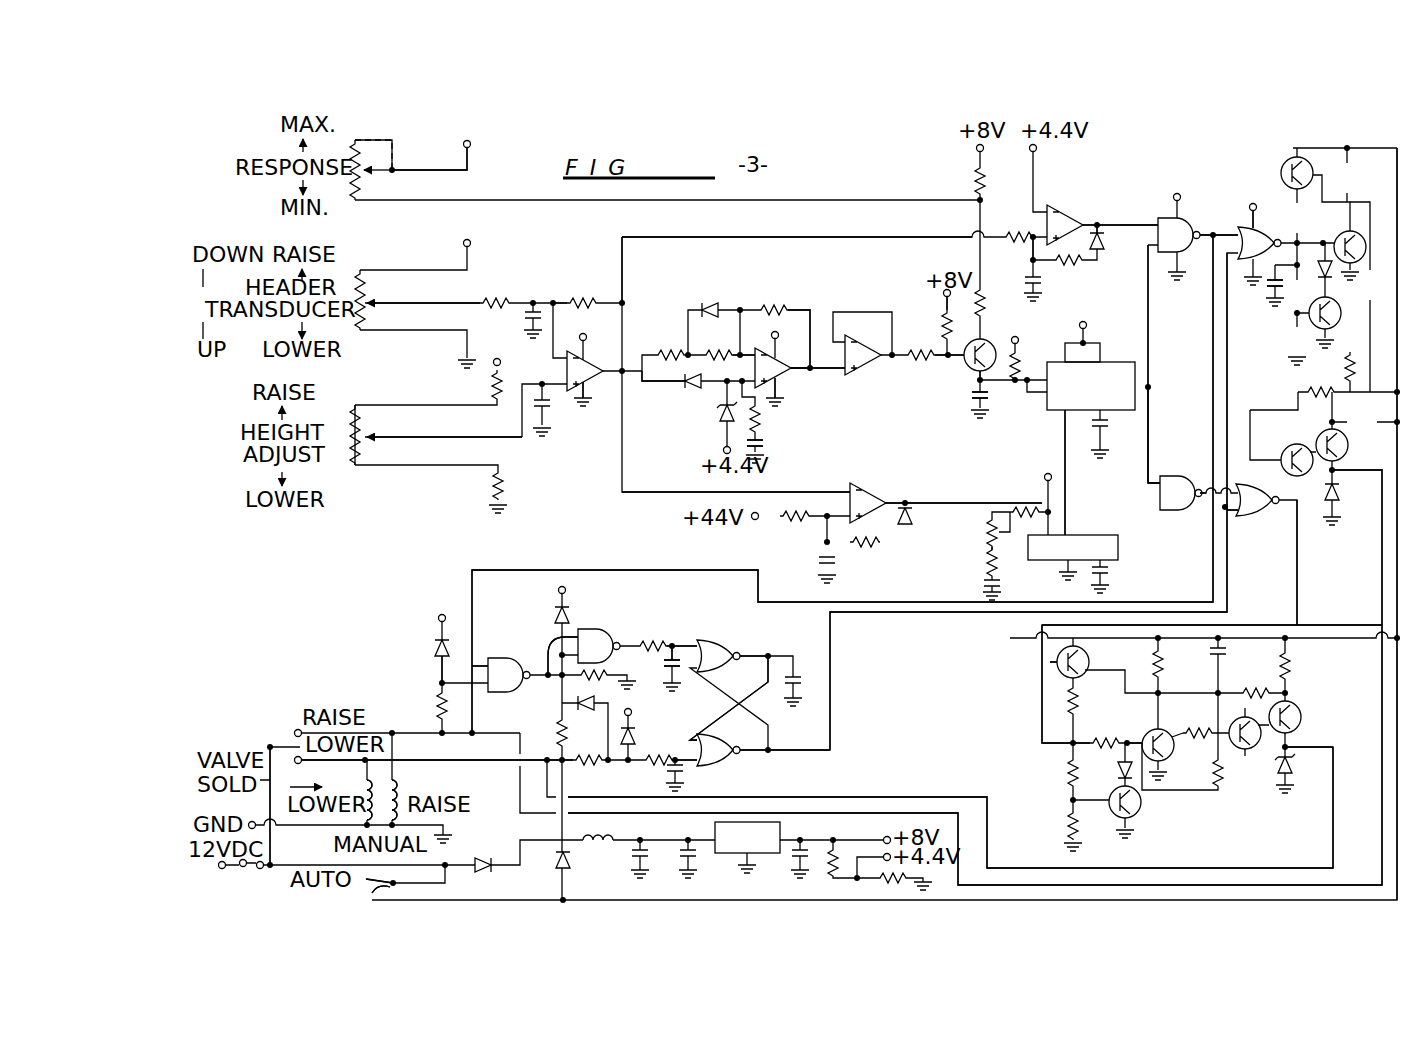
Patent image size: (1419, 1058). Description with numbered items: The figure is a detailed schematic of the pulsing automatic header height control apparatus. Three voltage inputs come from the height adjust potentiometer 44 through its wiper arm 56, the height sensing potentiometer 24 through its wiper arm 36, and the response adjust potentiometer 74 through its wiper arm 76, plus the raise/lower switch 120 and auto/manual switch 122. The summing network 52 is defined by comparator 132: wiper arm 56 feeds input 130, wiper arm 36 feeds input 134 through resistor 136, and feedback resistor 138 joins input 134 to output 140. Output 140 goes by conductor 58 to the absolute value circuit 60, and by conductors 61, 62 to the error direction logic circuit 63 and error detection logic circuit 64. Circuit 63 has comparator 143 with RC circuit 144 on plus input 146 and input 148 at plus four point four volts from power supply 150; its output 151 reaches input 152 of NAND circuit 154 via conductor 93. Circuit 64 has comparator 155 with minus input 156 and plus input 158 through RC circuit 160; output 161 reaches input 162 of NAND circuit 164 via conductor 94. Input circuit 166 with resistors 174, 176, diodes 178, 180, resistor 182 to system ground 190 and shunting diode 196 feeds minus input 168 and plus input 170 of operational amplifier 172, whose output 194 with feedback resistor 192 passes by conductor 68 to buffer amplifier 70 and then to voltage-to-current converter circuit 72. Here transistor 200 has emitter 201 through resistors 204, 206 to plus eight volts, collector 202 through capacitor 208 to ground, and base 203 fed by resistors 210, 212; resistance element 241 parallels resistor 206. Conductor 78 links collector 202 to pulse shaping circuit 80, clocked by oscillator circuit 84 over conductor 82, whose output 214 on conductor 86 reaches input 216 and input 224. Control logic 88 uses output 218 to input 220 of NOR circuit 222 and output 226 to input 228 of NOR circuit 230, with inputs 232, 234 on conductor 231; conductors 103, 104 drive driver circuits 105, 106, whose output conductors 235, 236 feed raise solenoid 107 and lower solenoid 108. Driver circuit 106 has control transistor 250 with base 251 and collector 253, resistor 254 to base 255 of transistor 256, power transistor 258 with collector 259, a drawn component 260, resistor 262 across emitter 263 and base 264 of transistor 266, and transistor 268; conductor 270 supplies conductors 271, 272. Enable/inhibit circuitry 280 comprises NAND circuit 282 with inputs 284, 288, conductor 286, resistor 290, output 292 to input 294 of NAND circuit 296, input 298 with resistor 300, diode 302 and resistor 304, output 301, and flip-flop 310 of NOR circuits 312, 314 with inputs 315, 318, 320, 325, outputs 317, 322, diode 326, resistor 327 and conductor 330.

The header height sensing potentiometer 24 is at (355, 286).
The wiper arm 36 is at (398, 303).
The height adjust potentiometer 44 is at (351, 458).
The summing network 52 is at (581, 424).
The wiper arm 56 is at (403, 437).
The conductor 58 is at (640, 277).
The absolute value circuit 60 is at (806, 411).
The conductor 61 is at (748, 237).
The conductor 62 is at (624, 492).
The error direction logic circuit 63 is at (1110, 194).
The error detection logic circuit 64 is at (913, 544).
The conductor 68 is at (813, 372).
The buffer amplifying circuit 70 is at (870, 372).
The voltage-to-current converter circuit 72 is at (942, 398).
The response adjust potentiometer 74 is at (350, 194).
The wiper arm 76 is at (440, 170).
The conductor 78 is at (1040, 407).
The pulse shaping circuit 80 is at (1061, 395).
The conductor 82 is at (1063, 455).
The oscillator circuit 84 is at (1160, 548).
The conductor 86 is at (1106, 425).
The control logic 88 is at (1193, 307).
The conductor 93 is at (1101, 250).
The conductor 94 is at (962, 505).
The conductor 103 is at (1258, 240).
The conductor 104 is at (1297, 578).
The driver circuit 105 is at (1282, 325).
The driver circuit 106 is at (1198, 800).
The raise solenoid 107 is at (396, 785).
The lower solenoid 108 is at (365, 782).
The raise/lower switch 120 is at (282, 745).
The auto/manual switch 122 is at (368, 897).
The input 130 is at (543, 383).
The comparator 132 is at (590, 400).
The input 134 is at (558, 308).
The resistor 136 is at (512, 309).
The feedback resistor 138 is at (598, 262).
The output 140 is at (604, 370).
The comparator 143 is at (1084, 222).
The RC circuit 144 is at (1027, 249).
The plus input 146 is at (1013, 221).
The input 148 is at (1047, 207).
The power supply 150 is at (832, 830).
The output 151 is at (1103, 225).
The input 152 is at (1120, 225).
The NAND circuit 154 is at (1182, 207).
The comparator 155 is at (873, 492).
The minus input 156 is at (822, 487).
The plus input 158 is at (848, 514).
The RC circuit 160 is at (815, 534).
The output 161 is at (950, 502).
The input 162 is at (1125, 503).
The NAND circuit 164 is at (1180, 476).
The input circuit 166 is at (682, 397).
The minus input 168 is at (742, 352).
The plus input 170 is at (750, 368).
The comparator/operational amplifier 172 is at (808, 330).
The resistor 174 is at (682, 352).
The resistor 176 is at (705, 352).
The diode 178 is at (695, 390).
The diode 180 is at (720, 425).
The resistor 182 is at (758, 425).
The system ground 190 is at (760, 452).
The feedback resistor 192 is at (778, 306).
The output 194 is at (780, 398).
The shunting diode 196 is at (710, 305).
The transistor 200 is at (959, 367).
The emitter 201 is at (1018, 341).
The collector 202 is at (978, 374).
The base 203 is at (968, 343).
The resistor 204 is at (1033, 278).
The resistor 206 is at (978, 175).
The capacitor 208 is at (994, 420).
The resistor 210 is at (944, 337).
The resistor 212 is at (915, 362).
The output 214 is at (1148, 387).
The input 216 is at (1174, 334).
The output 218 is at (1213, 232).
The input 220 is at (1238, 232).
The NOR circuit 222 is at (1250, 228).
The input 224 is at (1213, 495).
The output 226 is at (1228, 488).
The input 228 is at (1234, 488).
The NOR circuit 230 is at (1287, 497).
The conductor 231 is at (1230, 595).
The input 232 is at (1272, 292).
The input 234 is at (1236, 520).
The output conductor 235 is at (1382, 525).
The output conductor 236 is at (1320, 747).
The resistance element 241 is at (362, 185).
The control transistor 250 is at (1174, 754).
The base 251 is at (1135, 740).
The collector 253 is at (1160, 700).
The resistor 254 is at (1191, 717).
The base 255 is at (1230, 712).
The transistor 256 is at (1242, 752).
The power transistor 258 is at (1300, 712).
The collector 259 is at (1264, 779).
The resistor 260 is at (1292, 697).
The resistor 262 is at (1358, 637).
The emitter 263 is at (1040, 650).
The base 264 is at (1092, 698).
The transistor 266 is at (1055, 667).
The transistor 268 is at (1112, 818).
The conductor 270 is at (1397, 758).
The conductor 271 is at (1360, 362).
The conductor 272 is at (1365, 635).
The enable/inhibit circuitry 280 is at (422, 618).
The NAND circuit 282 is at (505, 658).
The input 284 is at (468, 660).
The conductor 286 is at (492, 570).
The input 288 is at (448, 706).
The resistor 290 is at (437, 683).
The output 292 is at (548, 650).
The input 294 is at (594, 640).
The NAND circuit 296 is at (645, 646).
The input 298 is at (582, 600).
The resistor 300 is at (600, 672).
The output 301 is at (678, 628).
The diode 302 is at (566, 866).
The resistor 304 is at (556, 732).
The flip-flop 310 is at (767, 644).
The NOR circuit 312 is at (751, 635).
The NOR circuit 314 is at (723, 774).
The input 315 is at (697, 647).
The output 317 is at (771, 656).
The input 318 is at (689, 771).
The input 320 is at (723, 737).
The output 322 is at (770, 752).
The input 325 is at (697, 650).
The diode 326 is at (627, 720).
The resistor 327 is at (580, 768).
The conductor 330 is at (490, 758).